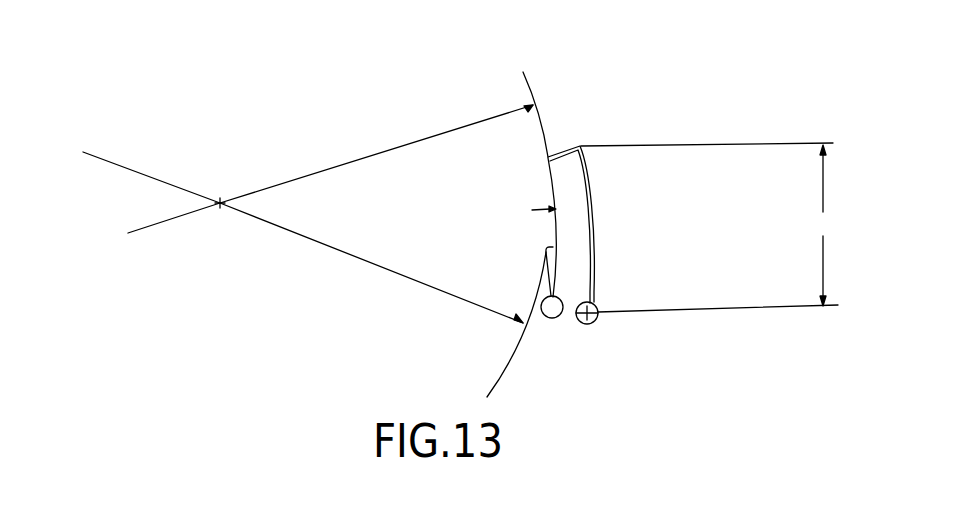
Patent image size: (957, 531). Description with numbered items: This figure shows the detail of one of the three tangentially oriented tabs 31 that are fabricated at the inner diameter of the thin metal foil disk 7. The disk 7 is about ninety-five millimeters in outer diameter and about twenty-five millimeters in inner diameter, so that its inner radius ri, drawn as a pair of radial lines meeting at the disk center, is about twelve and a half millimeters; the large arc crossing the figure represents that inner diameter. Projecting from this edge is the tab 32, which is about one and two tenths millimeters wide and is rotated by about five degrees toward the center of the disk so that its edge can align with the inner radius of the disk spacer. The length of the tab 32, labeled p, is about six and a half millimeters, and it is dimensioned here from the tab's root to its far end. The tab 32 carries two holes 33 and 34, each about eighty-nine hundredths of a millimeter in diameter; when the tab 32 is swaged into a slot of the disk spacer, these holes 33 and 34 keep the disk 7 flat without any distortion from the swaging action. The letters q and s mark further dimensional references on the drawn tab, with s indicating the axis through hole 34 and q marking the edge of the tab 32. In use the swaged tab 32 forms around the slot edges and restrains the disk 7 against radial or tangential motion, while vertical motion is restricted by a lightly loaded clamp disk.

The disk 7 is at (545, 88).
The tabs 31 is at (632, 101).
The tab 32 is at (570, 225).
The hole 33 is at (549, 320).
The hole 34 is at (598, 322).
The inner radius ri is at (83, 152).
The strip thickness q is at (591, 202).
The pivot axis s is at (587, 312).
The tab length p is at (710, 227).